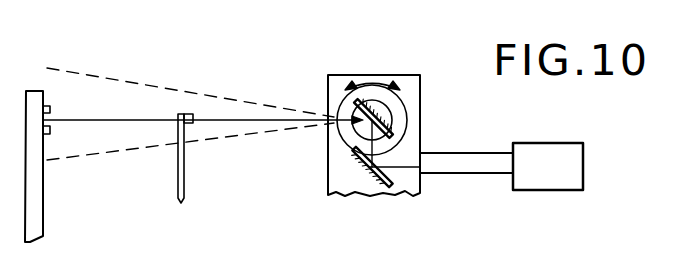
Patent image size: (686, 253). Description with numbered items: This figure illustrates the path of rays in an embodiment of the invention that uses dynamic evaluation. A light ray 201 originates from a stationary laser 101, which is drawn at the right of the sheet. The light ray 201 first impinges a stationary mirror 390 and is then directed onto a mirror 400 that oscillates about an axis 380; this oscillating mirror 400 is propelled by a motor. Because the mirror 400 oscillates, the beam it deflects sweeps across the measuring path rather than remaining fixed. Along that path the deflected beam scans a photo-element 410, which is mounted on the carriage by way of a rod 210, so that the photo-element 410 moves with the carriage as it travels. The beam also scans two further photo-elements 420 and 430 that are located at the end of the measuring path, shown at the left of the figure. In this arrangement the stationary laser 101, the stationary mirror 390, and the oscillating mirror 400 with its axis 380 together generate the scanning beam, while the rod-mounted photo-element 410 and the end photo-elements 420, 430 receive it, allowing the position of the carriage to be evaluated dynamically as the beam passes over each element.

The stationary laser 101 is at (563, 172).
The light ray 201 is at (408, 167).
The rod 210 is at (184, 179).
The axis 380 is at (356, 102).
The stationary mirror 390 is at (365, 166).
The mirror 400 is at (385, 136).
The photo-element 410 is at (194, 114).
The photo-element 420 is at (50, 107).
The photo-element 430 is at (50, 132).